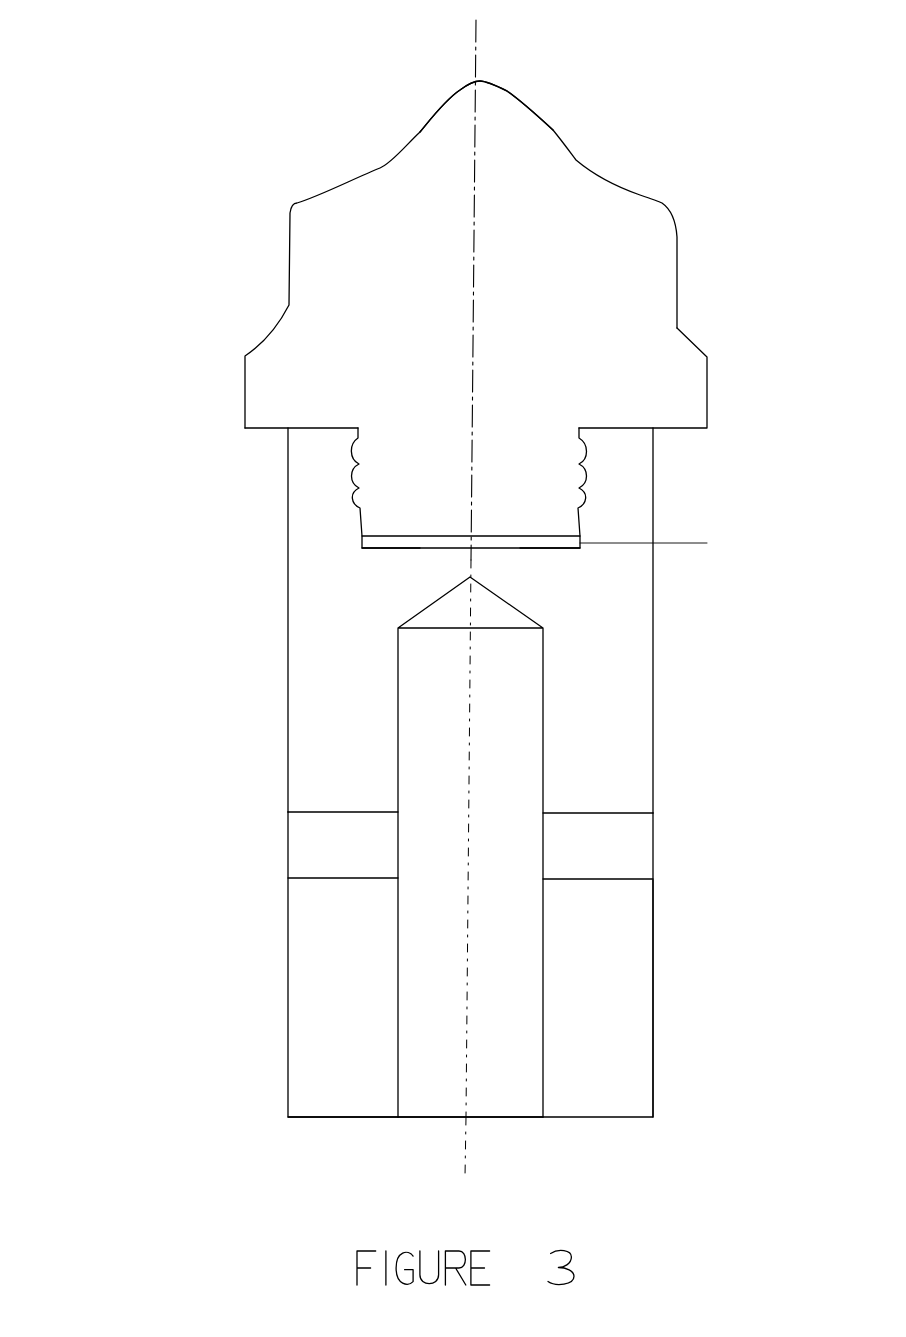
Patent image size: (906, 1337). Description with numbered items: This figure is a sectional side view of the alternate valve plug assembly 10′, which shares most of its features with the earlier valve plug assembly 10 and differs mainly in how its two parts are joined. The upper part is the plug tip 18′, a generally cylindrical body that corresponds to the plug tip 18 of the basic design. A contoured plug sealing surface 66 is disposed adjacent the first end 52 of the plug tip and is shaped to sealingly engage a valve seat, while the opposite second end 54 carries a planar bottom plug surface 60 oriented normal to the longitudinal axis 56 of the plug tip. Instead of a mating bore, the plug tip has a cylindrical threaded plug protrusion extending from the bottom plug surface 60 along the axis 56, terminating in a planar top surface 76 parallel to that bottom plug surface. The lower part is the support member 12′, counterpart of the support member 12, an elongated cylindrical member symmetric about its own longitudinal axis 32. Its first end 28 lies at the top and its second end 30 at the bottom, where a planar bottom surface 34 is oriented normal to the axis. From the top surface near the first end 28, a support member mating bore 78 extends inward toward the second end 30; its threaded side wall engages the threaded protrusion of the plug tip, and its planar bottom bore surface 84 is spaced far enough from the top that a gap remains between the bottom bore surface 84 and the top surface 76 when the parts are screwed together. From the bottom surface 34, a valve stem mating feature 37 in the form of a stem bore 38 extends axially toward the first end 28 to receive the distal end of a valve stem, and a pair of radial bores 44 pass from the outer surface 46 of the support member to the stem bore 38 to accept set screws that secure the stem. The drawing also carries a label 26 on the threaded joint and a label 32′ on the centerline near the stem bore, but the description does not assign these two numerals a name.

The valve plug assembly 10′ is at (406, 608).
The valve plug assembly 10 is at (406, 608).
The support member 12′ is at (406, 812).
The support member 12 is at (406, 812).
The plug tip 18′ is at (406, 307).
The plug tip 18 is at (406, 307).
The threads 26 is at (551, 482).
The first end 28 is at (372, 620).
The second end 30 is at (374, 965).
The central axis 32′ is at (503, 1156).
The longitudinal axis 32 is at (503, 1156).
The bottom surface 34 is at (318, 1152).
The valve stem mating feature 37 is at (502, 1148).
The stem bore 38 is at (470, 881).
The radial bore 44 is at (524, 851).
The outer surface 46 is at (690, 998).
The first end 52 is at (422, 254).
The second end 54 is at (244, 410).
The longitudinal axis 56 is at (509, 568).
The bottom plug surface 60 is at (671, 389).
The plug sealing surface 66 is at (529, 105).
The top surface 76 is at (314, 572).
The support member mating bore 78 is at (448, 536).
The bottom bore surface 84 is at (641, 571).